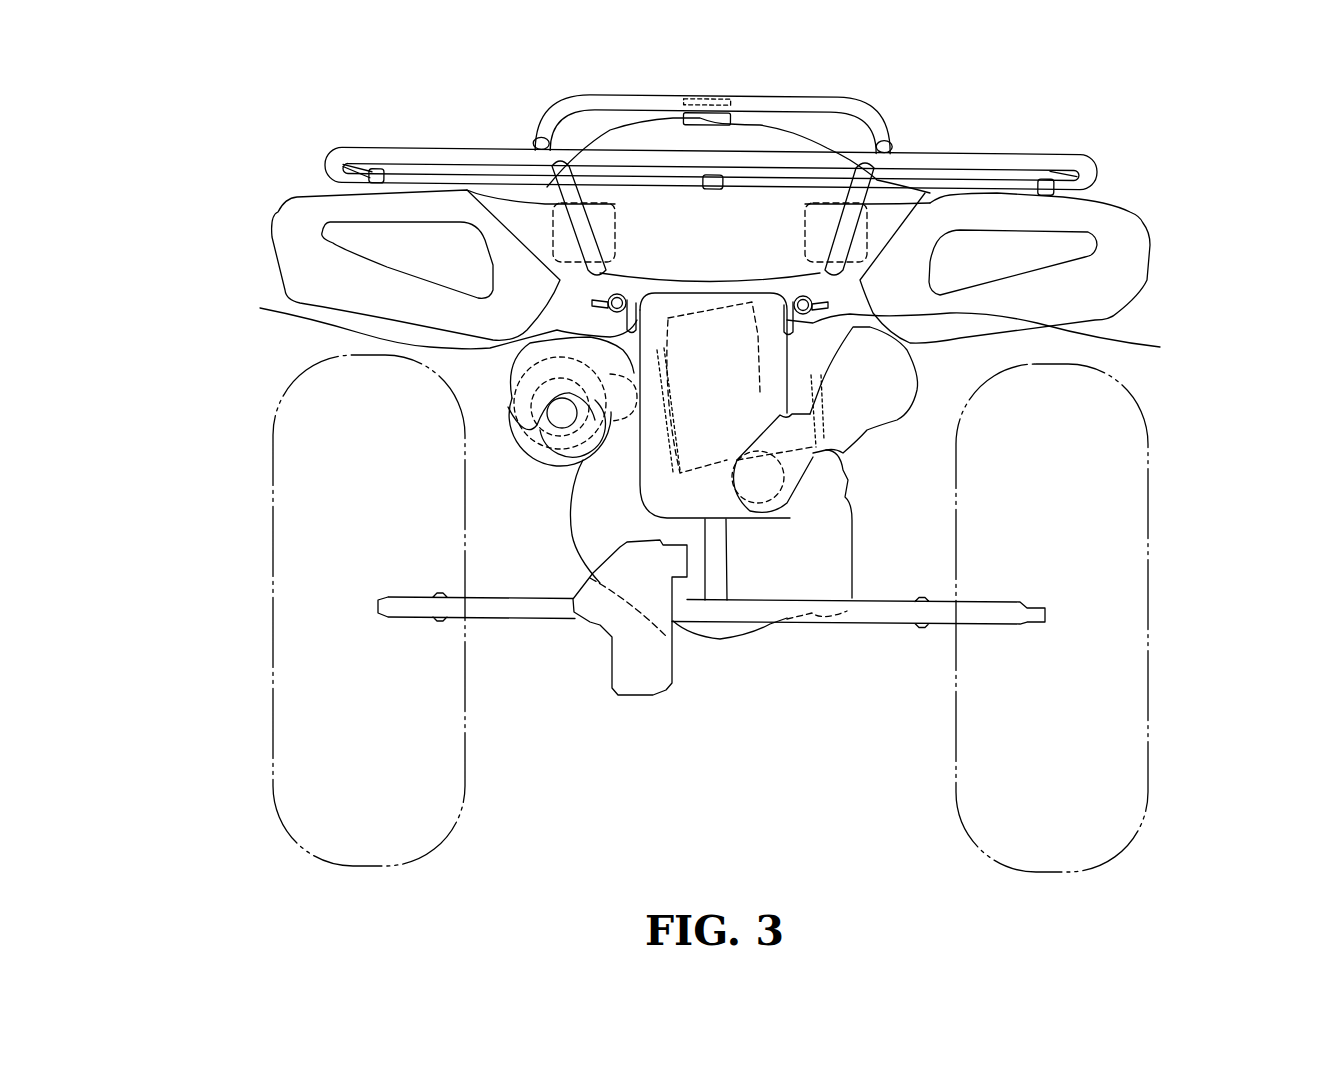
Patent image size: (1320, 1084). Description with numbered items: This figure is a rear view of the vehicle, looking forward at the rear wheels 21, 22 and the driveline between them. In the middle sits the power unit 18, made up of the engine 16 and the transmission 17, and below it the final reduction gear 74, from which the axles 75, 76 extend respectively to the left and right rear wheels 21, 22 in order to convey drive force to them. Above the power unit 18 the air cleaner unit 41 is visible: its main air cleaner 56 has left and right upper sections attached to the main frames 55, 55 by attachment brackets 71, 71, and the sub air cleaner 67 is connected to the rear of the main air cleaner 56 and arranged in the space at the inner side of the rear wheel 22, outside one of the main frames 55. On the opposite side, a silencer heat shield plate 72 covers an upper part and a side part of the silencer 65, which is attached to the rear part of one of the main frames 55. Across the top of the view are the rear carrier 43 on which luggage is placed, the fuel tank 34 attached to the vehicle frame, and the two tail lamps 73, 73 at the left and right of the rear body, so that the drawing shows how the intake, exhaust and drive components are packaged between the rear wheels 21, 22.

The engine 16 is at (760, 317).
The transmission 17 is at (573, 545).
The power unit 18 is at (729, 665).
The rear wheel 21 is at (273, 457).
The rear wheel 22 is at (1150, 485).
The fuel tank 34 is at (605, 126).
The air cleaner unit 41 is at (733, 549).
The rear carrier 43 is at (1047, 153).
The main frame 55 is at (260, 308).
The main air cleaner 56 is at (703, 600).
The silencer 65 is at (525, 462).
The sub air cleaner 67 is at (877, 433).
The attachment bracket 71 is at (590, 310).
The silencer heat shield plate 72 is at (523, 350).
The tail lamp 73 is at (317, 230).
The final reduction gear 74 is at (610, 690).
The axle 75 is at (512, 620).
The axle 76 is at (890, 624).